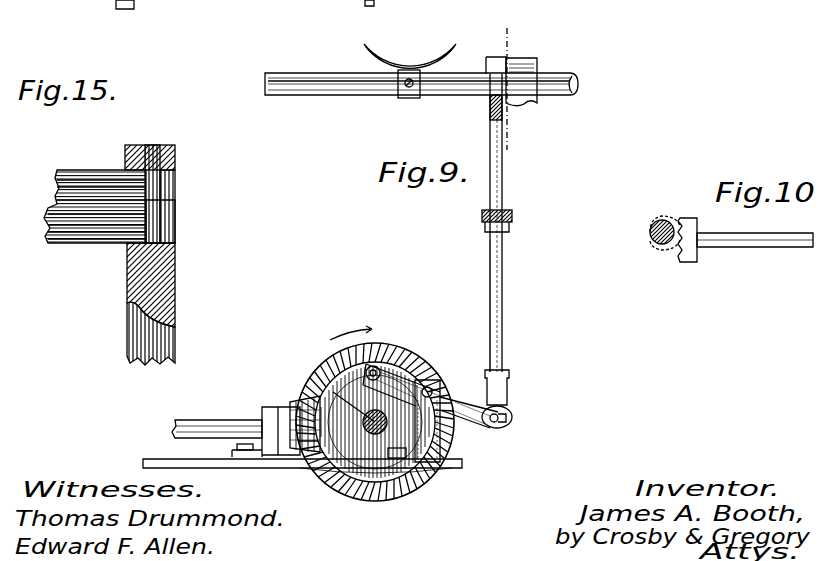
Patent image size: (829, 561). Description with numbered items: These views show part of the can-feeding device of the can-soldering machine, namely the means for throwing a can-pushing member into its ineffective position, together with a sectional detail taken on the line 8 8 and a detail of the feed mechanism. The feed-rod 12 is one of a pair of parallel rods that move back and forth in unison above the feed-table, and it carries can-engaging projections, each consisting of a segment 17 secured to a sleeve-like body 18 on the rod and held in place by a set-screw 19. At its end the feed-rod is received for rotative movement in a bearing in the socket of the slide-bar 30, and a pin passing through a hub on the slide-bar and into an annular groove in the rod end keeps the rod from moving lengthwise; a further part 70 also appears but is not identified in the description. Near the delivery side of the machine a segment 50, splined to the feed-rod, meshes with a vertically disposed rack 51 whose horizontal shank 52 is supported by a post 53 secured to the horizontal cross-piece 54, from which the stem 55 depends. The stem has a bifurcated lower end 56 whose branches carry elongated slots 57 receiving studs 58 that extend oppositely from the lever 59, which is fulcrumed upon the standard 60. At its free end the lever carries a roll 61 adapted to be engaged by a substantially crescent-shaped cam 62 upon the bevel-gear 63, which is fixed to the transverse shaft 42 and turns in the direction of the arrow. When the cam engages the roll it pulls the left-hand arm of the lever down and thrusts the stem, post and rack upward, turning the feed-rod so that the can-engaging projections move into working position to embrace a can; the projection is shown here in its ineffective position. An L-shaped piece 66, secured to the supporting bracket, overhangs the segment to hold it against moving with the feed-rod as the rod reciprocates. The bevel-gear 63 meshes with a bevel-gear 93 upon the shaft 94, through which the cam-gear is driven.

In FIG. 9, the section line 8 is at (507, 78).
In FIG. 9, the feed-rod 12 is at (578, 82).
In FIG. 10, the feed-rod 12 is at (663, 220).
In FIG. 9, the segment 17 is at (433, 62).
In FIG. 9, the sleeve-like body 18 is at (421, 99).
In FIG. 9, the set-screw 19 is at (405, 88).
In FIG. 15, the slide-bar 30 is at (126, 322).
In FIG. 9, the transverse shaft 42 is at (308, 402).
In FIG. 9, the segment 50 is at (512, 60).
In FIG. 10, the segment 50 is at (650, 232).
In FIG. 9, the rack 51 is at (490, 110).
In FIG. 10, the rack 51 is at (697, 258).
In FIG. 10, the shank 52 is at (797, 249).
In FIG. 9, the post 53 is at (503, 164).
In FIG. 9, the horizontal cross-piece 54 is at (512, 216).
In FIG. 9, the stem 55 is at (503, 280).
In FIG. 9, the bifurcated lower end 56 is at (510, 409).
In FIG. 9, the elongated slot 57 is at (513, 420).
In FIG. 9, the stud 58 is at (498, 428).
In FIG. 9, the lever 59 is at (457, 392).
In FIG. 9, the standard 60 is at (448, 441).
In FIG. 9, the roll 61 is at (397, 348).
In FIG. 9, the cam 62 is at (412, 490).
In FIG. 9, the bevel-gear 63 is at (370, 501).
In FIG. 9, the L-shaped piece 66 is at (487, 57).
In FIG. 15, the shaft 70 is at (80, 244).
In FIG. 9, the bevel-gear 93 is at (289, 408).
In FIG. 9, the shaft 94 is at (203, 420).